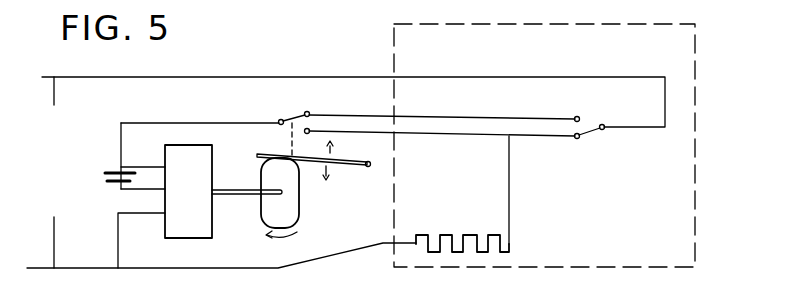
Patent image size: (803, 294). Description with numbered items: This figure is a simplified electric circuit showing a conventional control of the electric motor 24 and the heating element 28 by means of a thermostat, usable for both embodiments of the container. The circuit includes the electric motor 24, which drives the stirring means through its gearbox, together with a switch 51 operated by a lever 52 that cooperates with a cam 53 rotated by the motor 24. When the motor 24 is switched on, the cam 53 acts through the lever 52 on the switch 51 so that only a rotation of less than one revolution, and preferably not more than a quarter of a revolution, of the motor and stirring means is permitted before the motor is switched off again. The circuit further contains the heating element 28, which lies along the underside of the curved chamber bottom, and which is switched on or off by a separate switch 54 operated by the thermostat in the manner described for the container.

The electric motor 24 is at (190, 229).
The electric heating element 28 is at (447, 235).
The switch 51 is at (292, 116).
The lever 52 is at (340, 168).
The cam 53 is at (290, 201).
The switch 54 is at (590, 137).